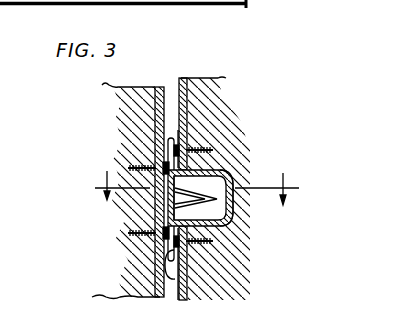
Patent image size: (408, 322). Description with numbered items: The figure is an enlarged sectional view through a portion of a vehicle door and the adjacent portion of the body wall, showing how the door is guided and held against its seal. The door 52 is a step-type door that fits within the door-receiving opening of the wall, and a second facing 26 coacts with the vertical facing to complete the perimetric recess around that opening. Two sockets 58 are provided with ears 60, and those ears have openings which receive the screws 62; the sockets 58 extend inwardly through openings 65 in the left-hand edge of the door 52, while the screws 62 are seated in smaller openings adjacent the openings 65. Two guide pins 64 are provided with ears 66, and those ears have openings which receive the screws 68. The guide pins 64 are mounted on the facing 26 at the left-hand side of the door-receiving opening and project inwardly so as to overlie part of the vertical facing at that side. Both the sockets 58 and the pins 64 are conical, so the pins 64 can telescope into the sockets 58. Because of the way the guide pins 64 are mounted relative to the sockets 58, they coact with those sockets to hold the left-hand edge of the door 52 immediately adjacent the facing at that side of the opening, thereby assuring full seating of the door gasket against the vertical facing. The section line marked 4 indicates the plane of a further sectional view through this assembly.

The second facing 26 is at (157, 87).
The door 52 is at (199, 78).
The socket 58 is at (229, 173).
The ear 60 is at (188, 104).
The screw 62 is at (213, 148).
The guide pin 64 is at (172, 197).
The opening 65 is at (236, 219).
The ear 66 is at (158, 133).
The screw 68 is at (128, 166).
The section line 4- 4 is at (195, 188).